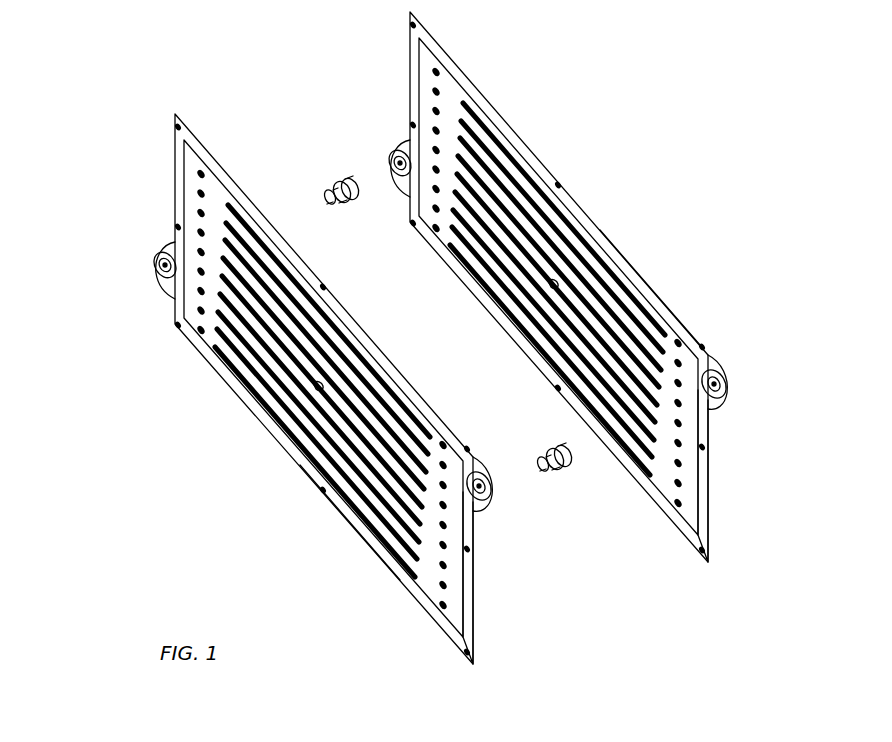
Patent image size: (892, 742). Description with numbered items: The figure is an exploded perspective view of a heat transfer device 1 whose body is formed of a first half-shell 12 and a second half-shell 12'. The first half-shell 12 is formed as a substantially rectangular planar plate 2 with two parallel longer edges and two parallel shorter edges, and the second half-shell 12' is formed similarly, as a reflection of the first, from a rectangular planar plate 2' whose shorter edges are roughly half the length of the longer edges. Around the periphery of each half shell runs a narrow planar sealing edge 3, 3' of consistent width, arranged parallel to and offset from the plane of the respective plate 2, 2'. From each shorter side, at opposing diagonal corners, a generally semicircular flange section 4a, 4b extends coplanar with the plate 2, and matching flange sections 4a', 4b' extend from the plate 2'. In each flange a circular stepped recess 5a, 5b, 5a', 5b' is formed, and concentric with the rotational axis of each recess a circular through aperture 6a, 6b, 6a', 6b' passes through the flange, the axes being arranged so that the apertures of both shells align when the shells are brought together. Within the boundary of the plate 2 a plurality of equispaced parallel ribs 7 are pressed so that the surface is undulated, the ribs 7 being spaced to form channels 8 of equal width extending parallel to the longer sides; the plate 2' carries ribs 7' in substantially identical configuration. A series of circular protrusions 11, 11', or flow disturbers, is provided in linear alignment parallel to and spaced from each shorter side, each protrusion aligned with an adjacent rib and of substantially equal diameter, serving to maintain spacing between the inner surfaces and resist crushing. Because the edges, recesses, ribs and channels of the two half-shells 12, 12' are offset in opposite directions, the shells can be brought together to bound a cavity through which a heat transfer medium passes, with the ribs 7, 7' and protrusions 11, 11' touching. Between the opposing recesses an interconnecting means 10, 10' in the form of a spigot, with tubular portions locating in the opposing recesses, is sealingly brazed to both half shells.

The heat transfer device 1 is at (567, 117).
The rectangular planar plate 2 is at (560, 286).
The rectangular planar plate 2' is at (322, 385).
The planar sealing edge 3 is at (728, 476).
The planar sealing edge 3' is at (495, 578).
The flange section 4a is at (730, 364).
The flange section 4b is at (382, 184).
The flange section 4a' is at (498, 465).
The flange section 4b' is at (147, 286).
The circular stepped recess 5a is at (722, 417).
The circular stepped recess 5b is at (383, 139).
The circular stepped recess 5a' is at (488, 512).
The circular stepped recess 5b' is at (140, 244).
The circular through aperture 6a is at (745, 378).
The circular through aperture 6b is at (370, 159).
The circular through aperture 6a' is at (511, 486).
The circular through aperture 6b' is at (132, 268).
The parallel ribs 7 is at (564, 219).
The parallel ribs 7' is at (322, 391).
The channels 8 is at (593, 252).
The interconnecting means 10 is at (571, 481).
The interconnecting means 10' is at (322, 173).
The circular protrusions 11 is at (557, 282).
The circular protrusions 11' is at (339, 358).
The first half-shell 12 is at (650, 287).
The second half-shell 12' is at (350, 540).